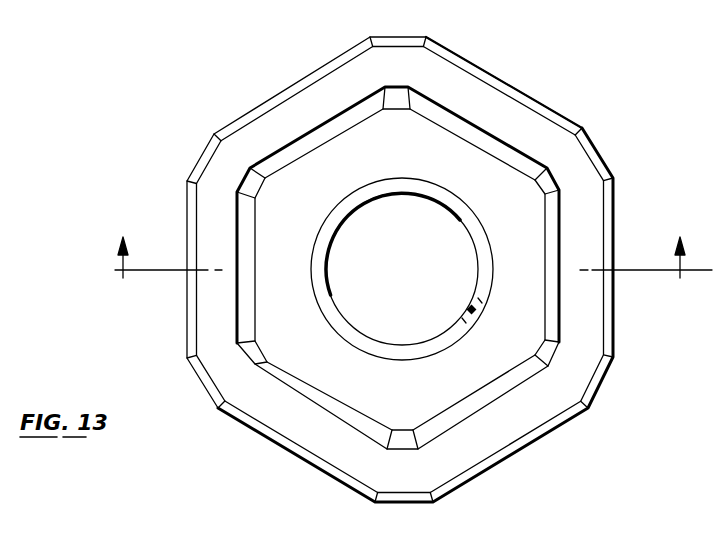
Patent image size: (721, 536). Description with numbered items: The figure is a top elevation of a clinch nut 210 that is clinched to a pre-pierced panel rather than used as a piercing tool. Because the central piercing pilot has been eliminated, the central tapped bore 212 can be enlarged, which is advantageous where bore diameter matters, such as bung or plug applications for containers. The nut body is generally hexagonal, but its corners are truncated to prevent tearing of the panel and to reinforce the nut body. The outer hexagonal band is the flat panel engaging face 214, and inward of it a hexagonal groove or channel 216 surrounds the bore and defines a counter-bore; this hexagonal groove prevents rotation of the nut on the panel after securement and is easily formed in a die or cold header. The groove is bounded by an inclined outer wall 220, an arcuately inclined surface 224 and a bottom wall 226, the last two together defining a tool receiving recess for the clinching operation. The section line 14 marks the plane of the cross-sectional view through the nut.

The section line 14- 14 is at (412, 246).
The nut 210 is at (263, 446).
The tapped bore 212 is at (333, 254).
The panel engaging face 214 is at (258, 128).
The groove or channel 216 is at (548, 210).
The inclined outer wall 220 is at (490, 133).
The arcuately inclined surface 224 is at (488, 395).
The bottom wall 226 is at (533, 303).